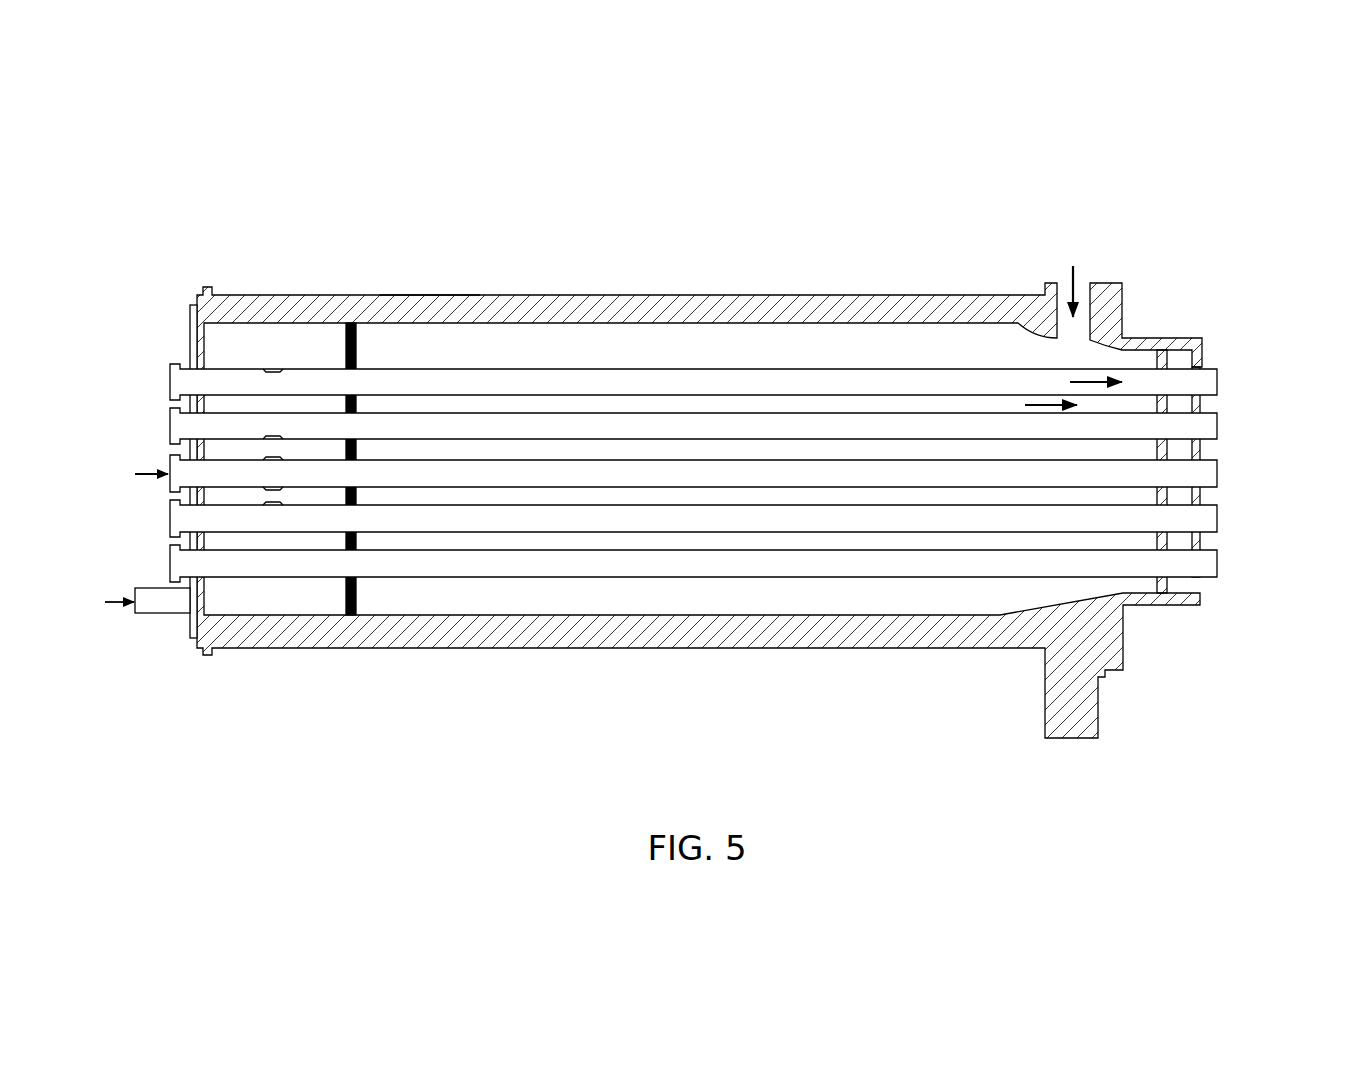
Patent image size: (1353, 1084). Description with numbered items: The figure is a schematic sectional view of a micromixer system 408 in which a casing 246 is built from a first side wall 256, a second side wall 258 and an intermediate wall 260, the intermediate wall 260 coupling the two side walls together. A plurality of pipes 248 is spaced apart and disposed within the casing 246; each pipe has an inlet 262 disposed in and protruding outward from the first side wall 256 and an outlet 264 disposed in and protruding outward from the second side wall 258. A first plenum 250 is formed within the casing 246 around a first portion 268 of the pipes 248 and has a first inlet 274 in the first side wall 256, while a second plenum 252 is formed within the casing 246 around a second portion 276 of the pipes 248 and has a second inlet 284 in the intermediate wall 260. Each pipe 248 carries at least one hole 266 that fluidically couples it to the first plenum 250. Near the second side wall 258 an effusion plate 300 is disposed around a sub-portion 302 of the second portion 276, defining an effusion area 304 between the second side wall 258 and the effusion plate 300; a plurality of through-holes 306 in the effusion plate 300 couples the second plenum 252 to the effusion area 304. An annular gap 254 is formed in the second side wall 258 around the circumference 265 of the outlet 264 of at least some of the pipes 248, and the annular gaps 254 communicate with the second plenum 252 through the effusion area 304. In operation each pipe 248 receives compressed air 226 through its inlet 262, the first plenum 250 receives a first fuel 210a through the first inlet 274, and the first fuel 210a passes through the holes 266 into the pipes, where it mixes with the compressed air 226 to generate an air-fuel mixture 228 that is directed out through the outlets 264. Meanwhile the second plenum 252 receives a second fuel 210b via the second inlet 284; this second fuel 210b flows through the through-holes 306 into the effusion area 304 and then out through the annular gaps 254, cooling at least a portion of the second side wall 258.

The micromixer system 408 is at (1140, 160).
The casing 246 is at (600, 292).
The intermediate wall 260 is at (423, 306).
The second plenum 252 is at (750, 334).
The second inlet 284 is at (1065, 320).
The second side wall 258 is at (1202, 352).
The effusion plate 300 is at (1170, 350).
The effusion area 304 is at (1198, 600).
The first side wall 256 is at (196, 336).
The first inlet 274 is at (172, 616).
The first plenum 250 is at (274, 338).
The inlet 262 is at (175, 382).
The plurality of pipes 248 is at (549, 518).
The circumference 265 is at (1210, 553).
The hole 266 is at (270, 464).
The outlet 264 is at (1212, 381).
The annular gap 254 is at (1216, 459).
The through-holes 306 is at (1200, 581).
The sub-portion 302 is at (1165, 617).
The compressed air 226 is at (148, 470).
The first fuel 210a is at (118, 600).
The air-fuel mixture 228 is at (1085, 380).
The second fuel 210b is at (1040, 412).
The first portion 268 is at (204, 740).
The second portion 276 is at (355, 740).